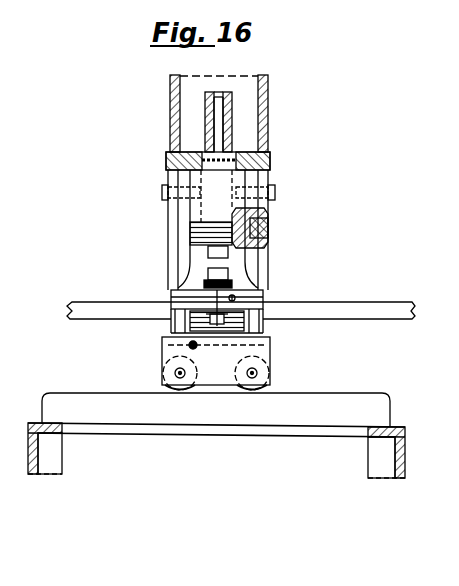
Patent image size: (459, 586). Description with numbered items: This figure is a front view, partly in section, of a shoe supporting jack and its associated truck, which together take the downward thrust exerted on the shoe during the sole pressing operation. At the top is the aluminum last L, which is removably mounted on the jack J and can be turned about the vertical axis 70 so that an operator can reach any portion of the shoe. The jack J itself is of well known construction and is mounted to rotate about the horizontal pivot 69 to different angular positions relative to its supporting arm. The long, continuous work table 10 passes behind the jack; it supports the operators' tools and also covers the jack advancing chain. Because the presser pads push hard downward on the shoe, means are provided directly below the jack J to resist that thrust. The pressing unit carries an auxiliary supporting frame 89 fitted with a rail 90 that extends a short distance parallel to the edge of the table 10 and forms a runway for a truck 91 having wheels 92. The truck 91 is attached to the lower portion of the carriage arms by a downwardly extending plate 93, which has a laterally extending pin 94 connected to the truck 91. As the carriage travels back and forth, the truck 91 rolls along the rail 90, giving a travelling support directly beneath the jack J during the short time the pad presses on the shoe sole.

The last L is at (268, 112).
The vertical axis 70 is at (209, 128).
The jack J is at (166, 243).
The horizontal pivot 69 is at (162, 193).
The table 10 is at (344, 302).
The downwardly extending plate 93 is at (217, 321).
The truck 91 is at (270, 357).
The laterally extending pin 94 is at (188, 348).
The wheels 92 is at (270, 372).
The rail 90 is at (353, 398).
The auxiliary supporting frame 89 is at (50, 456).